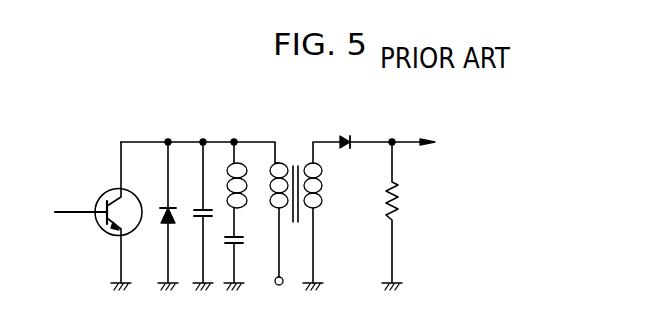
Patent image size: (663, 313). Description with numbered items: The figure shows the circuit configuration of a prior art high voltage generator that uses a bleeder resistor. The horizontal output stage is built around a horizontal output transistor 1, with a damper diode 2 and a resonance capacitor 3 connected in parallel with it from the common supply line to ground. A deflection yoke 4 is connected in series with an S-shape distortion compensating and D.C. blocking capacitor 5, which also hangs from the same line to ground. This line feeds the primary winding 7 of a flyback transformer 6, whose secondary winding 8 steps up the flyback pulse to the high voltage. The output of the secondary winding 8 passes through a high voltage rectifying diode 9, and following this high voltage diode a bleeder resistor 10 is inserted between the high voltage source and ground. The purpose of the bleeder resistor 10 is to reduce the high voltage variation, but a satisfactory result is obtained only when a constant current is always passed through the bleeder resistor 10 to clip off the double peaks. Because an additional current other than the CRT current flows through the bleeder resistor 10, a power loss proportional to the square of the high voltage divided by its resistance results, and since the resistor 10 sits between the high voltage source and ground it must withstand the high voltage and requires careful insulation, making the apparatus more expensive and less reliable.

The horizontal output transistor 1 is at (99, 195).
The damper diode 2 is at (164, 204).
The resonance capacitor 3 is at (196, 210).
The deflection yoke 4 is at (228, 188).
The S-shape distortion compensating and D.C. blocking capacitor 5 is at (243, 240).
The flyback transformer 6 is at (285, 150).
The primary winding 7 is at (274, 174).
The secondary winding 8 is at (320, 212).
The high voltage rectifying diode 9 is at (341, 136).
The bleeder resistor 10 is at (406, 211).